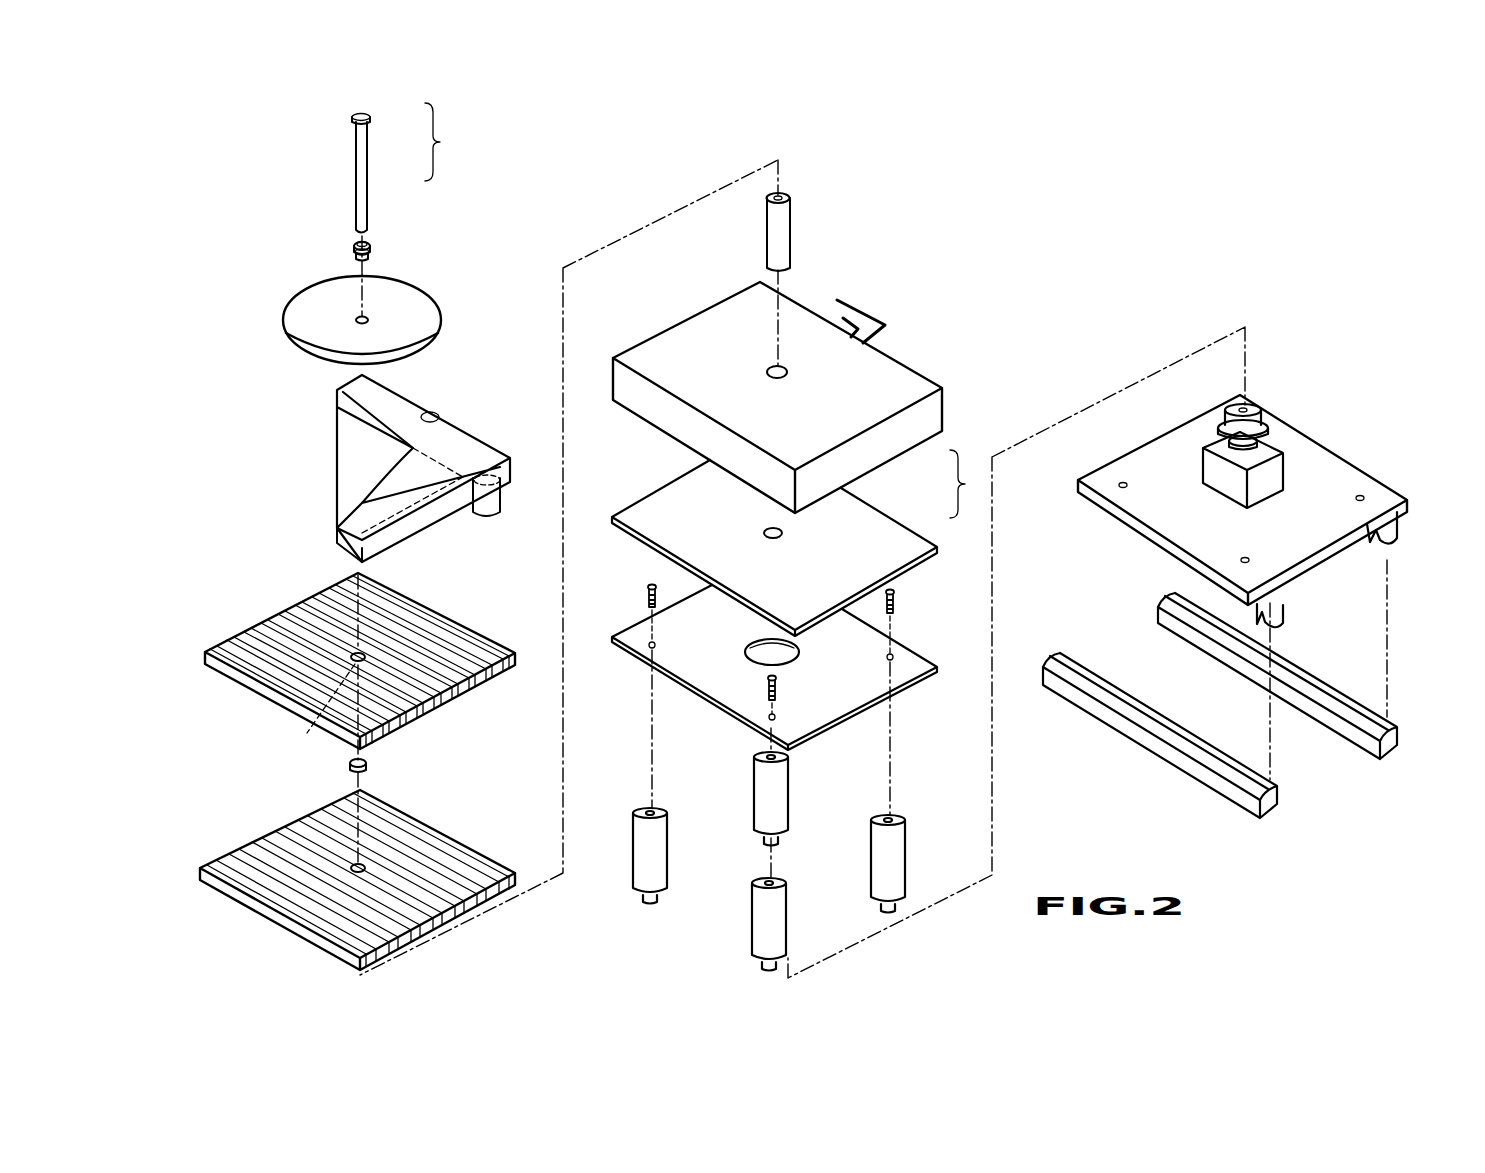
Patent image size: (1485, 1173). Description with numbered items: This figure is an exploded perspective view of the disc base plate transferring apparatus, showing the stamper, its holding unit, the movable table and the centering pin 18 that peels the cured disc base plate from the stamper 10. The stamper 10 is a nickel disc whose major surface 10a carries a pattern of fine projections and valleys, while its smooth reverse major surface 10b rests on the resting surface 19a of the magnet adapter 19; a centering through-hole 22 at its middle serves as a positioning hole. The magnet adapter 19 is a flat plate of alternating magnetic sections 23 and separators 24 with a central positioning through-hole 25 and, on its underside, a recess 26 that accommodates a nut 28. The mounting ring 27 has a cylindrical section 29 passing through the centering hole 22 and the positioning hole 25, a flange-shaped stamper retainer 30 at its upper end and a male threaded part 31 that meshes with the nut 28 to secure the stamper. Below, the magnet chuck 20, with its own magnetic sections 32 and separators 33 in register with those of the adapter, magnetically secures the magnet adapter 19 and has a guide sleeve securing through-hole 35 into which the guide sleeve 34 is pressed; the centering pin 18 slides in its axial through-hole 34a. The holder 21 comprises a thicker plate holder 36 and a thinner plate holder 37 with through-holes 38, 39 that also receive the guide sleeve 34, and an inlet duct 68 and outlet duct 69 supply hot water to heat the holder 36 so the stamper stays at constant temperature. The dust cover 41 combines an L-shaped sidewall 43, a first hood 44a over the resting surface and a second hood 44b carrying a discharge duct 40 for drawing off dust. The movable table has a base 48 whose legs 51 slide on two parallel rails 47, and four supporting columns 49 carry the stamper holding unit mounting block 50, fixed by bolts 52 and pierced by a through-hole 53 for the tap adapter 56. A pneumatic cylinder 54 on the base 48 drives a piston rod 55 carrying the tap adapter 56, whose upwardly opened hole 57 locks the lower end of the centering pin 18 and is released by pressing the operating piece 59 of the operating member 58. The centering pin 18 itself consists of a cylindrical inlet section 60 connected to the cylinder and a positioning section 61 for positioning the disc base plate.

The stamper 10 is at (441, 328).
The major surface 10a is at (428, 303).
The reverse major surface 10b is at (405, 356).
The centering pin 18 is at (446, 142).
The magnet adapter 19 is at (476, 623).
The resting surface 19a is at (280, 688).
The magnet chuck 20 is at (290, 930).
The holder 21 is at (974, 484).
The centering through-hole 22 is at (368, 318).
The magnetic sections 23 is at (232, 640).
The separators 24 is at (262, 620).
The positioning through-hole 25 is at (367, 654).
The recess 26 is at (314, 707).
The mounting ring 27 is at (355, 247).
The nut 28 is at (368, 765).
The cylindrical section 29 is at (370, 254).
The stamper retainer 30 is at (370, 243).
The male threaded part 31 is at (368, 260).
The magnetic sections 32 is at (228, 857).
The separators 33 is at (278, 840).
The guide sleeve 34 is at (792, 232).
The axial through-hole 34a is at (784, 198).
The guide sleeve securing through-hole 35 is at (366, 865).
The holder 36 is at (905, 440).
The holder 37 is at (890, 525).
The through-hole 38 is at (770, 370).
The through-hole 39 is at (784, 531).
The discharge duct 40 is at (493, 506).
The dust cover 41 is at (505, 447).
The sidewall 43 is at (430, 520).
The first hood 44a is at (460, 435).
The second hood 44b is at (345, 542).
The rails 47 is at (1192, 730).
The base 48 is at (1400, 510).
The supporting columns 49 is at (778, 905).
The stamper holding unit mounting block 50 is at (905, 655).
The legs 51 is at (1290, 600).
The bolts 52 is at (780, 690).
The through-hole 53 is at (790, 657).
The pneumatic cylinder 54 is at (1283, 462).
The piston rod 55 is at (1250, 470).
The tap adapter 56 is at (1262, 445).
The hole 57 is at (1247, 408).
The operating member 58 is at (1266, 424).
The operating piece 59 is at (1228, 420).
The inlet section 60 is at (367, 165).
The positioning section 61 is at (370, 119).
The inlet duct 68 is at (842, 318).
The outlet duct 69 is at (878, 318).